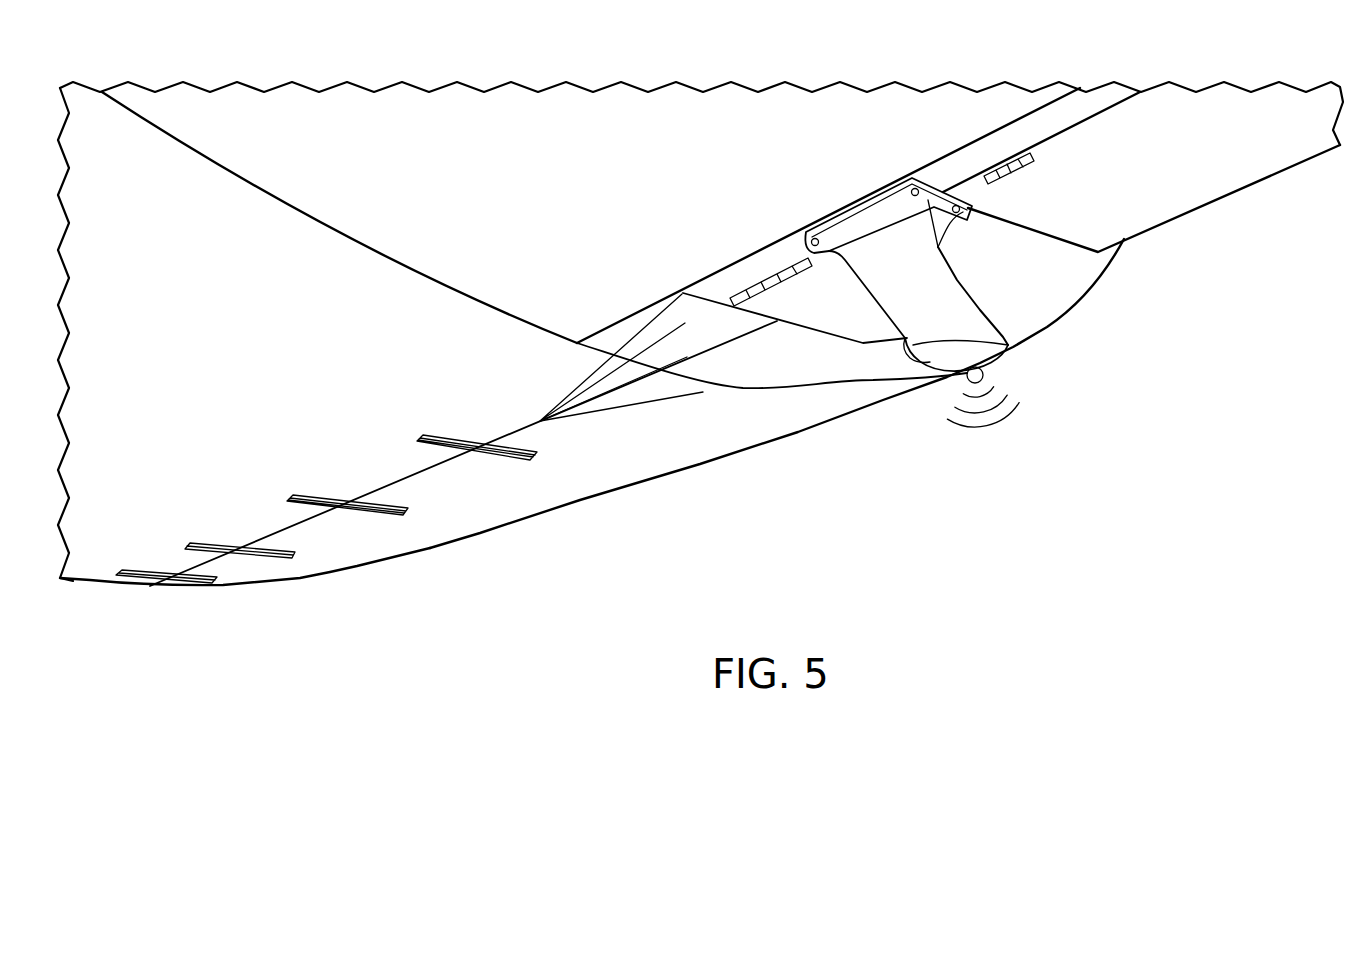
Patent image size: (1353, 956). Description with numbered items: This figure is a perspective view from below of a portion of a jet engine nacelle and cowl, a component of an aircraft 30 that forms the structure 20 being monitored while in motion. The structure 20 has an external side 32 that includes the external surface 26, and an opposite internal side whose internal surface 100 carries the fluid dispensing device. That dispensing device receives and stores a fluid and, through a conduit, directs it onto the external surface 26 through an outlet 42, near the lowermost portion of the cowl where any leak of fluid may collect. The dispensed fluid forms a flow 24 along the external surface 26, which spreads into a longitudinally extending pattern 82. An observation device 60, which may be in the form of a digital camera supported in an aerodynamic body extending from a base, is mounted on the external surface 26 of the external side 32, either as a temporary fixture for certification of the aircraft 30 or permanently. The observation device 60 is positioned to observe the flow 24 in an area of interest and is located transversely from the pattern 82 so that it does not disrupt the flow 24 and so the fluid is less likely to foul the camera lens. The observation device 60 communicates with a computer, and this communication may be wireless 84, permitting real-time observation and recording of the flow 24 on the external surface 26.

The structure 20 is at (747, 455).
The flow 24 is at (583, 368).
The external surface 26 is at (94, 560).
The aircraft 30 is at (858, 500).
The external side 32 is at (893, 110).
The outlet 42 is at (392, 491).
The observation device 60 is at (1008, 327).
The pattern 82 is at (540, 420).
The wireless communication 84 is at (988, 426).
The internal surface 100 is at (377, 569).